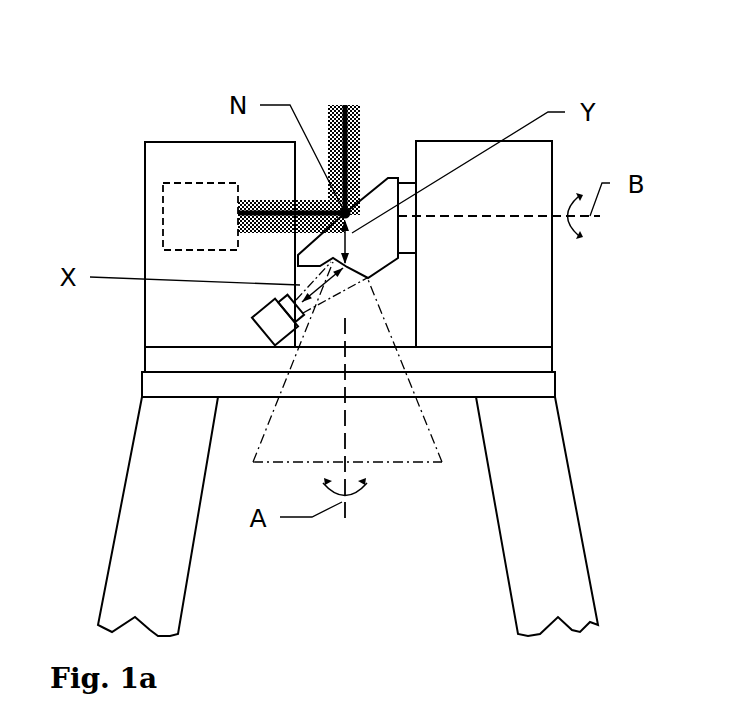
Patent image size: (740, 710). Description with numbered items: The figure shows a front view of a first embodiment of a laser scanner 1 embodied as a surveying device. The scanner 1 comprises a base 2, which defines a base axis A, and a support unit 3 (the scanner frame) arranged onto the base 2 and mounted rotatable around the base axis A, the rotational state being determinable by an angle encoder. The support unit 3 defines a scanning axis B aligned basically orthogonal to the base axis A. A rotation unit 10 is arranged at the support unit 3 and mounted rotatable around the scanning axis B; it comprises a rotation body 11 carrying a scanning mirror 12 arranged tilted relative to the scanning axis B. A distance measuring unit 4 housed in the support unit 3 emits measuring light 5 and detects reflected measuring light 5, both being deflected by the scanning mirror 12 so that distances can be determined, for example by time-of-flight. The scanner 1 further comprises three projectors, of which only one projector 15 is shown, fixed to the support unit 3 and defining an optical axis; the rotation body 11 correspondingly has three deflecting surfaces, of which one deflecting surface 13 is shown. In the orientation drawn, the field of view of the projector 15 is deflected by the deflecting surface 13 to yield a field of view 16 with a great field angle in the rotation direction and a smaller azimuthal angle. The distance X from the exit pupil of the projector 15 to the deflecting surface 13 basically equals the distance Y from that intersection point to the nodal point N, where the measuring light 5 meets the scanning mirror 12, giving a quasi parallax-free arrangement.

The laser scanner 1 is at (129, 20).
The base 2 is at (357, 491).
The support unit 3 is at (178, 221).
The distance measuring unit 4 is at (149, 203).
The measuring light 5 is at (294, 141).
The rotation unit 10 is at (474, 212).
The rotation body 11 is at (427, 140).
The scanning mirror 12 is at (305, 129).
The deflecting surface 13 is at (465, 229).
The projector 15 is at (206, 310).
The field of view 16 is at (360, 388).